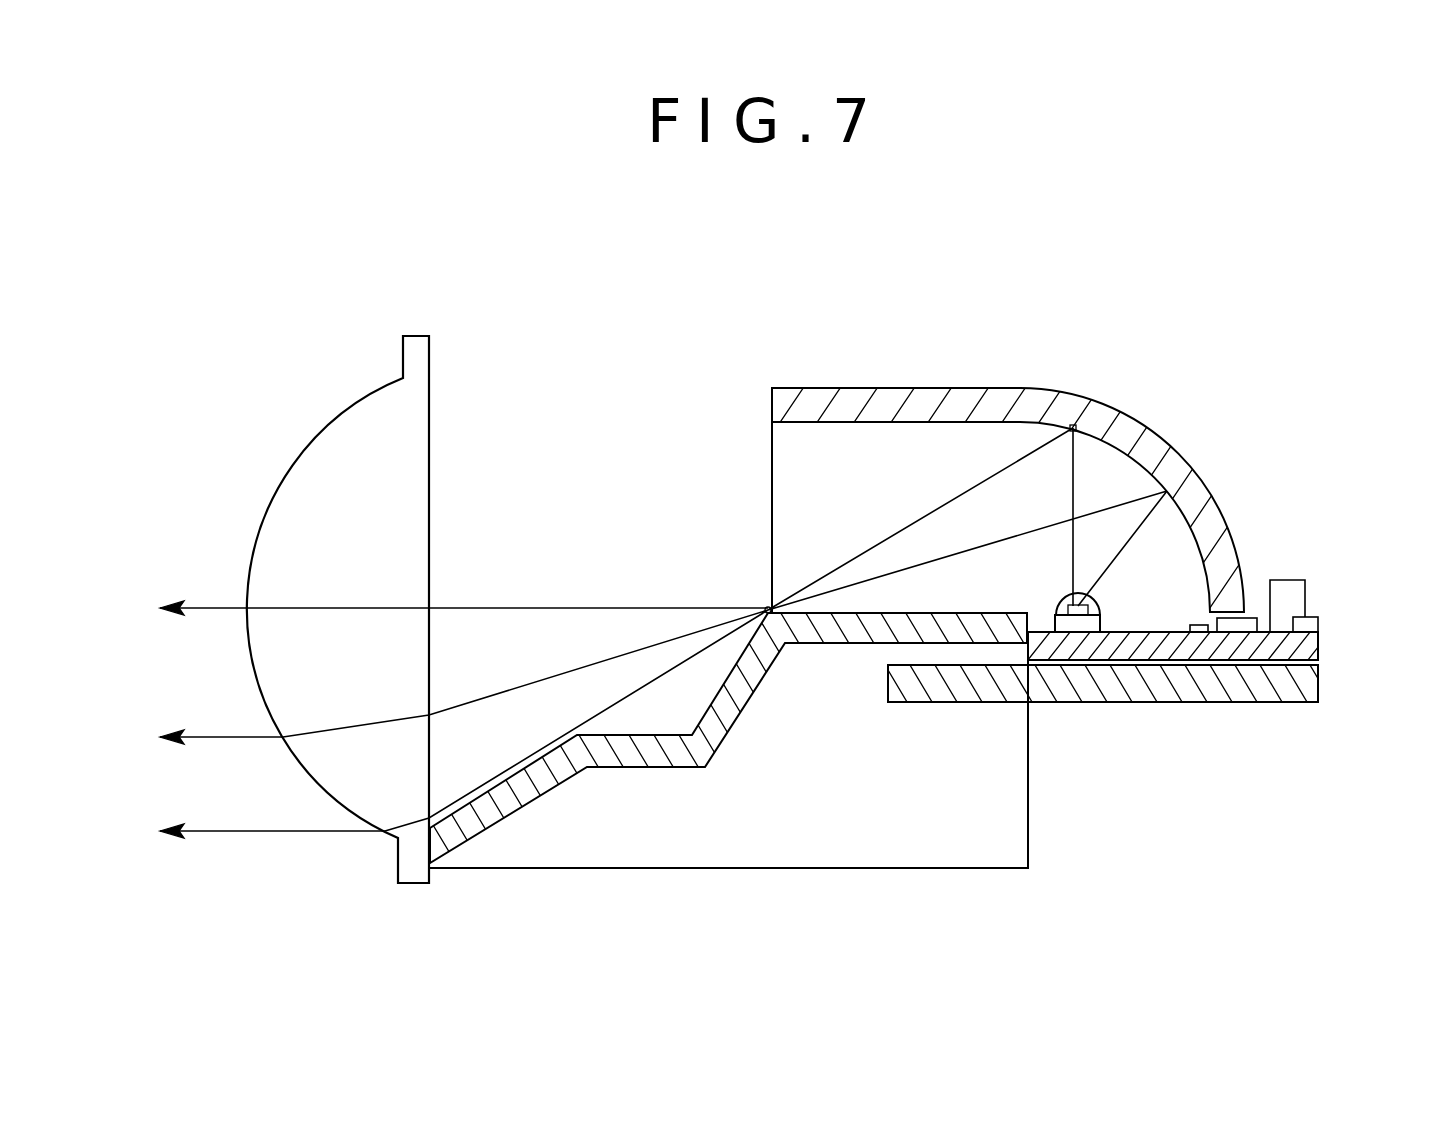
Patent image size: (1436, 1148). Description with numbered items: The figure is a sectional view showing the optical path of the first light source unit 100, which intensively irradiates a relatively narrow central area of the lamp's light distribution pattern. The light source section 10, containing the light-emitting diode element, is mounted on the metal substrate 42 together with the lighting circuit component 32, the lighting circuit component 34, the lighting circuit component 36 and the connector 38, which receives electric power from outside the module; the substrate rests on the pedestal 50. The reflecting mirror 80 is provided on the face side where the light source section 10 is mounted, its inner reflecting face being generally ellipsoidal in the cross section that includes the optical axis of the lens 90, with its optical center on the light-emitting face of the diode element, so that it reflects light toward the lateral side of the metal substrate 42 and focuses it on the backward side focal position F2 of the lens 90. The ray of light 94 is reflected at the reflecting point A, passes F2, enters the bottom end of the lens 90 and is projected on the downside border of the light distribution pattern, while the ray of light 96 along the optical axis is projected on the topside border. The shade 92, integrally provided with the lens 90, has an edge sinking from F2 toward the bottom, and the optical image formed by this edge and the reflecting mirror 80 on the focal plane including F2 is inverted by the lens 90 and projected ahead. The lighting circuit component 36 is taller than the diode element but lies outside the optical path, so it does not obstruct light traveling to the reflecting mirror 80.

The first light source unit 100 is at (915, 247).
The lens 90 is at (327, 453).
The reflecting mirror 80 is at (953, 388).
The shade 92 is at (733, 700).
The backward side focal position F2 is at (768, 608).
The reflecting point A is at (1092, 404).
The ray of light 96 is at (226, 606).
The ray of light 94 is at (220, 833).
The light source section 10 is at (1055, 598).
The lighting circuit component 32 is at (1203, 623).
The lighting circuit component 34 is at (1240, 617).
The lighting circuit component 36 is at (1298, 593).
The connector 38 is at (1310, 625).
The metal substrate 42 is at (1313, 647).
The pedestal 50 is at (1082, 690).